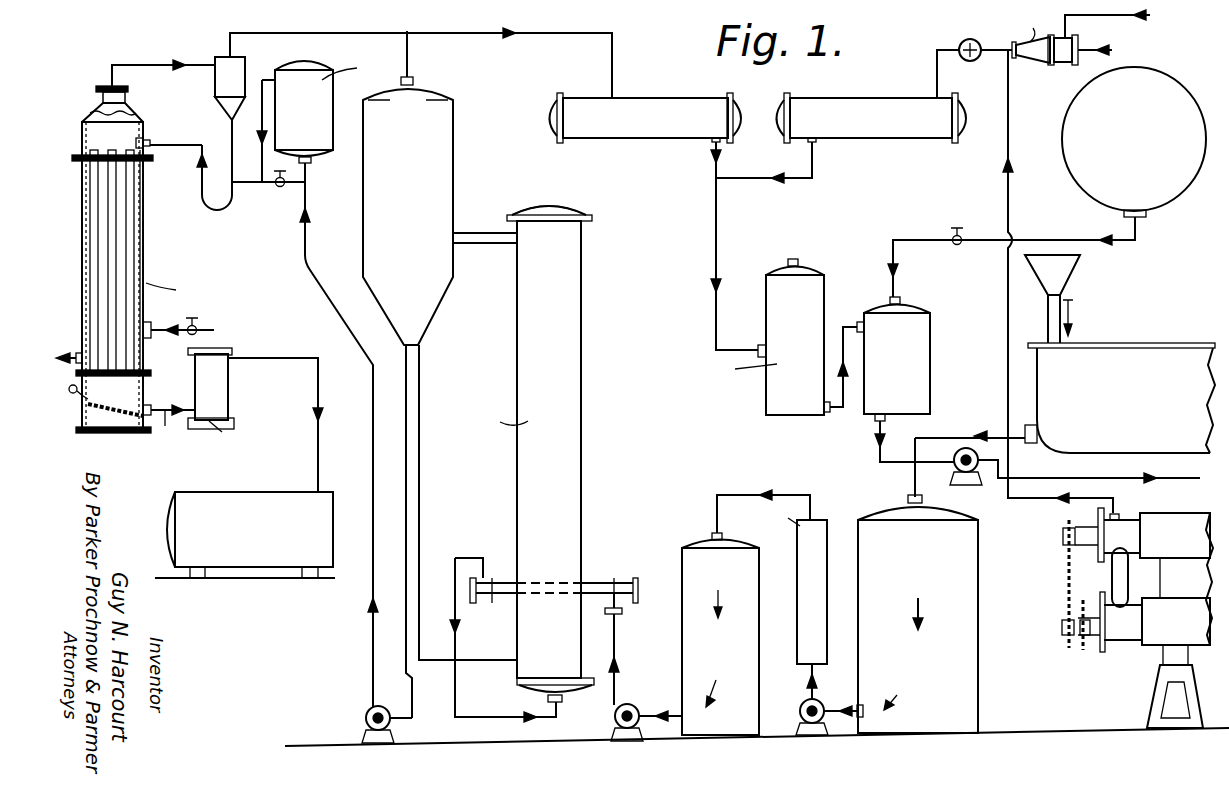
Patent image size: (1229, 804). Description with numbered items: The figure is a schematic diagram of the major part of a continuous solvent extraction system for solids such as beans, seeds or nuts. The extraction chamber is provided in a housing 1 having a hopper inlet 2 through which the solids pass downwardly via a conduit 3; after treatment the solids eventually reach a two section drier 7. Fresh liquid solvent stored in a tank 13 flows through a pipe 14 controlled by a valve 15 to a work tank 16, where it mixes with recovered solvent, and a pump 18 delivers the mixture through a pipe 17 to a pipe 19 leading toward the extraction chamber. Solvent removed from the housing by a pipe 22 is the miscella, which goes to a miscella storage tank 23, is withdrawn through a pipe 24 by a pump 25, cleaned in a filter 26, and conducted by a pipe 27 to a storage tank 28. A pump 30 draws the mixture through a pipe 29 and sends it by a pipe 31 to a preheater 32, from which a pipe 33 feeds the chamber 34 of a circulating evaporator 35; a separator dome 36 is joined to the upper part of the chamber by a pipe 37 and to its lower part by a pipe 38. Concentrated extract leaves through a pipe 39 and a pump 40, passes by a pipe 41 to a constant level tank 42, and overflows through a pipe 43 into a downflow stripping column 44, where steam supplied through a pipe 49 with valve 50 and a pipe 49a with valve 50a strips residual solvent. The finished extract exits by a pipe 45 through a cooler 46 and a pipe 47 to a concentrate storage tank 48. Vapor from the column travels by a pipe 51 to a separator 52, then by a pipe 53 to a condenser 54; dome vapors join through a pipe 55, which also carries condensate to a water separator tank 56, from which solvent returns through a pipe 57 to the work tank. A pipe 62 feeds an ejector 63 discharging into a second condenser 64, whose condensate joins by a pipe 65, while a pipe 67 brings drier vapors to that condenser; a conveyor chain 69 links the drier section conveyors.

The housing 1 is at (1150, 344).
The hopper inlet 2 is at (1052, 275).
The conduit 3 is at (1048, 318).
The two section drier 7 is at (1183, 514).
The tank 13 is at (1134, 142).
The pipe 14 is at (900, 244).
The valve 15 is at (962, 230).
The work tank 16 is at (893, 359).
The pipe 17 is at (878, 462).
The pump 18 is at (978, 458).
The pipe 19 is at (1085, 479).
The pipe 22 is at (952, 441).
The miscella storage tank 23 is at (918, 614).
The pipe 24 is at (830, 707).
The pump 25 is at (801, 710).
The filter 26 is at (781, 585).
The pipe 27 is at (752, 495).
The storage tank 28 is at (720, 634).
The pipe 29 is at (650, 714).
The pump 30 is at (615, 716).
The pipe 31 is at (622, 650).
The preheater 32 is at (600, 590).
The pipe 33 is at (458, 706).
The chamber 34 is at (509, 454).
The circulating evaporator 35 is at (566, 204).
The separator dome 36 is at (408, 211).
The pipe 37 is at (500, 243).
The pipe 38 is at (420, 483).
The pipe 39 is at (405, 720).
The pump 40 is at (366, 712).
The pipe 41 is at (371, 443).
The constant level tank 42 is at (317, 109).
The pipe 43 is at (262, 160).
The downflow stripping column 44 is at (147, 246).
The pipe 45 is at (173, 427).
The cooler 46 is at (229, 390).
The pipe 47 is at (318, 383).
The concentrate storage tank 48 is at (245, 535).
The pipe 49 is at (212, 334).
The pipe 49a is at (90, 400).
The valve 50 is at (197, 320).
The valve 50a is at (72, 399).
The pipe 51 is at (148, 65).
The separator 52 is at (197, 133).
The pipe 53 is at (288, 36).
The condenser 54 is at (701, 100).
The pipe 55 is at (410, 58).
The water separator tank 56 is at (716, 337).
The pipe 57 is at (832, 413).
The pipe 62 is at (1105, 18).
The ejector 63 is at (1045, 60).
The condenser 64 is at (875, 100).
The pipe 65 is at (820, 170).
The pipe 67 is at (1035, 503).
The conveyor chain 69 is at (1066, 568).